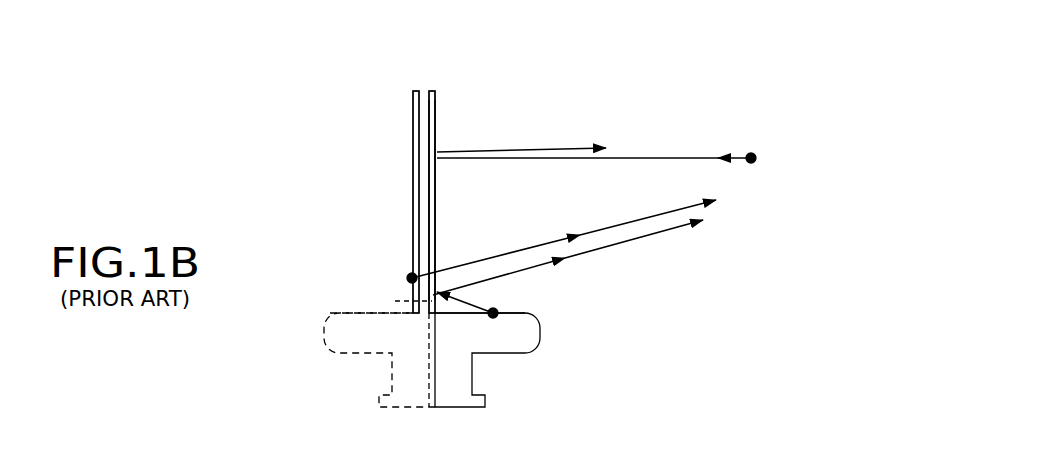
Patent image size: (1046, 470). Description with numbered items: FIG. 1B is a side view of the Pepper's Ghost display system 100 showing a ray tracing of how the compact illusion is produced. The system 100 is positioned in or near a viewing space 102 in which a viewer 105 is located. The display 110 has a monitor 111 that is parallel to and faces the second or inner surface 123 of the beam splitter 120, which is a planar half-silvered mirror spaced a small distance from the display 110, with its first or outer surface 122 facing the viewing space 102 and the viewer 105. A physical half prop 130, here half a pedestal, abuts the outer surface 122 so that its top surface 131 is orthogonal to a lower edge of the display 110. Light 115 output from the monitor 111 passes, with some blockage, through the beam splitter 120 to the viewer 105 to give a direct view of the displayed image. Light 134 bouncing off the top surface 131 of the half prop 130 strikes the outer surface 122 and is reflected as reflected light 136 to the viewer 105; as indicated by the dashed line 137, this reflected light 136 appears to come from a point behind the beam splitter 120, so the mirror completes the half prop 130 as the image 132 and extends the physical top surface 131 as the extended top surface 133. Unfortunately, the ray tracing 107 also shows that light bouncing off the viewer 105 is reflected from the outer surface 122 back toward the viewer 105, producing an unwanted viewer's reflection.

The Pepper's Ghost display system 100 is at (236, 199).
The display 110 is at (413, 99).
The monitor 111 is at (421, 92).
The beam splitter 120 is at (434, 91).
The outer surface 122 is at (437, 130).
The inner surface 123 is at (430, 156).
The ray tracing 107 is at (598, 114).
The viewer 105 is at (652, 148).
The light output from the monitor 115 is at (508, 250).
The reflected light 136 is at (605, 248).
The light bouncing off the half prop 134 is at (475, 302).
The top surface 131 is at (520, 318).
The half prop 130 is at (522, 425).
The image of the half prop 132 is at (330, 360).
The extended top surface 133 is at (350, 311).
The dashed line 137 is at (396, 300).
The viewing space 102 is at (850, 297).